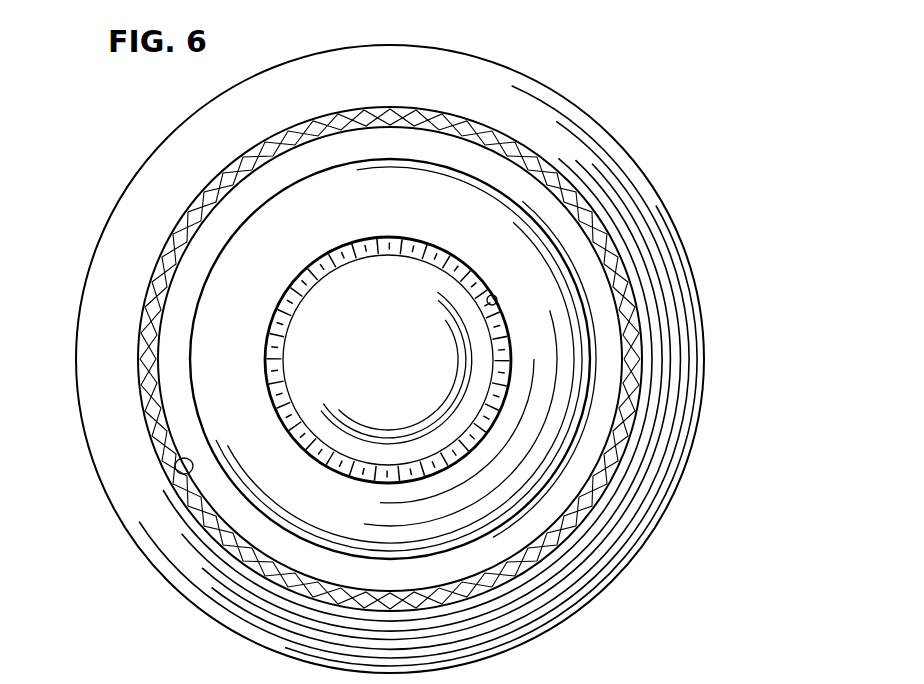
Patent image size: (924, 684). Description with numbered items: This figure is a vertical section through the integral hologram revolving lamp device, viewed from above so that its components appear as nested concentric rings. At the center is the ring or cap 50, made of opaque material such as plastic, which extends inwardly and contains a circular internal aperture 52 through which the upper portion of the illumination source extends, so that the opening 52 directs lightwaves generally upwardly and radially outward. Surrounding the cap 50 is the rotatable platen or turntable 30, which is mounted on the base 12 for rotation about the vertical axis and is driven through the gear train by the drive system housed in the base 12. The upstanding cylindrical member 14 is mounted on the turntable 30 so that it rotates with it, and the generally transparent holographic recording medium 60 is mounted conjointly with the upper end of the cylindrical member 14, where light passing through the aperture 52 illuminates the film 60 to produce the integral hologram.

The base 12 is at (635, 192).
The cylindrical member 14 is at (150, 440).
The rotatable platen or turntable 30 is at (500, 173).
The ring or cap 50 is at (560, 330).
The circular internal aperture 52 is at (500, 300).
The holographic recording medium or film 60 is at (183, 475).